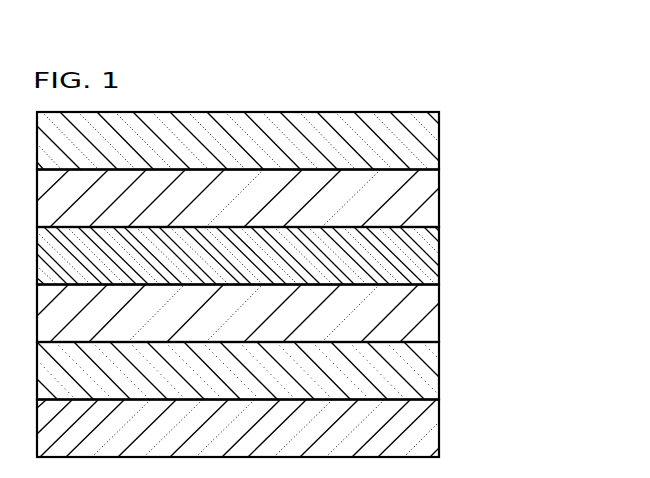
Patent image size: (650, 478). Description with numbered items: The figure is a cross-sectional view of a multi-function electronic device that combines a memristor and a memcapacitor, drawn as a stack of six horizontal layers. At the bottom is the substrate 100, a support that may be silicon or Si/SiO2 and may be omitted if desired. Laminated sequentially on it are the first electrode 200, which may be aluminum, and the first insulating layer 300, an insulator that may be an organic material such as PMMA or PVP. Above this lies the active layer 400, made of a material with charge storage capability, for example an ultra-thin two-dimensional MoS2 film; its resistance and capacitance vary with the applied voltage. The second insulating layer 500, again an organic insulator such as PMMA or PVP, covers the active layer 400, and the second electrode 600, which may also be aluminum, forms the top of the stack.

The substrate 100 is at (434, 418).
The first electrode 200 is at (434, 361).
The first insulating layer 300 is at (434, 303).
The active layer 400 is at (434, 245).
The second insulating layer 500 is at (434, 190).
The second electrode 600 is at (434, 132).